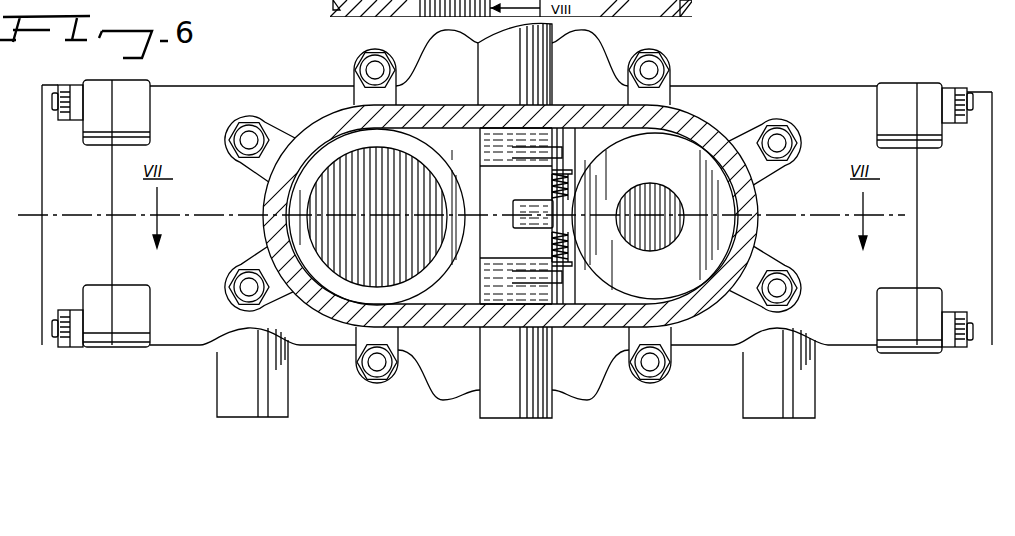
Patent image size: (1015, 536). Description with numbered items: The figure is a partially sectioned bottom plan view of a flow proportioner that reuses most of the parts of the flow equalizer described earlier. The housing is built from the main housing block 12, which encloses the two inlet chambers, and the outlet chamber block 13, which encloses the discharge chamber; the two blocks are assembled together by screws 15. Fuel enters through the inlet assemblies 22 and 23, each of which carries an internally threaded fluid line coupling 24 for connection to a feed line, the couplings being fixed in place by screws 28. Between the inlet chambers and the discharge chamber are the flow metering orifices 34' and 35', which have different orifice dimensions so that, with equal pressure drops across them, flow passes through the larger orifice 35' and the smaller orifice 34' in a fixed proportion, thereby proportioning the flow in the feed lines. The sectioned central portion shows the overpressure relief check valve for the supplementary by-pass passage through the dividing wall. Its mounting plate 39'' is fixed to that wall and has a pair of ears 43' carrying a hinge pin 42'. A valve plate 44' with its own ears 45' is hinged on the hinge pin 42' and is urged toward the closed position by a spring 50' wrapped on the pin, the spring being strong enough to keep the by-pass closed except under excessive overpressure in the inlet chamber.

The main housing block 12 is at (860, 141).
The outlet chamber block 13 is at (712, 132).
The screws 15 is at (355, 69).
The inlet assembly 22 is at (918, 78).
The inlet assembly 23 is at (89, 354).
The fluid line coupling 24 is at (53, 157).
The screws 28 is at (63, 95).
The flow metering orifice 34' is at (650, 204).
The flow metering orifice 35' is at (380, 217).
The mounting plate 39'' is at (653, 216).
The hinge pin 42' is at (593, 216).
The ears 43' is at (573, 213).
The valve plate 44' is at (516, 216).
The ears 45' is at (542, 217).
The spring 50' is at (517, 224).